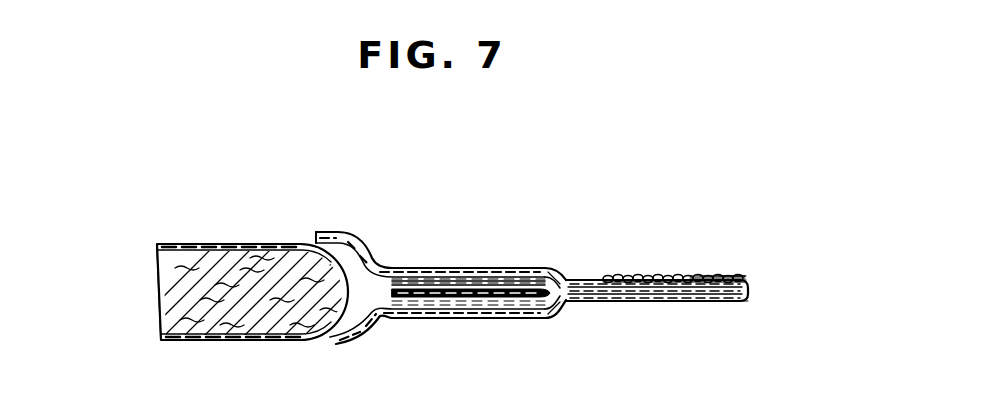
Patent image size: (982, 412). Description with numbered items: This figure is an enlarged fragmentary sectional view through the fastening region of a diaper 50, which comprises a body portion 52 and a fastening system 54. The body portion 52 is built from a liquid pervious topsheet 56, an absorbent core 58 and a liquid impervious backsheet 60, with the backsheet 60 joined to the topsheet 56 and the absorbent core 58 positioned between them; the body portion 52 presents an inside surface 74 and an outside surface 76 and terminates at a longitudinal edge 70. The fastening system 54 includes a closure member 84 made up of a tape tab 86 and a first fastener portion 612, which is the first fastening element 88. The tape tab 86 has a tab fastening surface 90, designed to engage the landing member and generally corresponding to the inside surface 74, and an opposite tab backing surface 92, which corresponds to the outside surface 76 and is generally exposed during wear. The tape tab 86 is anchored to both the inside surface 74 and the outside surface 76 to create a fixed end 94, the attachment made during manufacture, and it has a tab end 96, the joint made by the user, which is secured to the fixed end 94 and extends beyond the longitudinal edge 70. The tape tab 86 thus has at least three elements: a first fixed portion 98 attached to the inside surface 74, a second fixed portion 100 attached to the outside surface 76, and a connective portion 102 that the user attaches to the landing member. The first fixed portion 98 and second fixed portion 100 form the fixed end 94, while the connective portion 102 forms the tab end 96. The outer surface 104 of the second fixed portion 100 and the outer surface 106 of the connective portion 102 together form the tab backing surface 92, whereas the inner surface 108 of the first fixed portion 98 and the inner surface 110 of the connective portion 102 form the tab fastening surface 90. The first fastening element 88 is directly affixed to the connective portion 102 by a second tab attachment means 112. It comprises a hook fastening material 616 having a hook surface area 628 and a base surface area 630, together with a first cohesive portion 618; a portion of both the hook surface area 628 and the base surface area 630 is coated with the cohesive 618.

The diaper 50 is at (158, 203).
The body portion 52 is at (152, 228).
The fastening system 54 is at (500, 200).
The topsheet 56 is at (196, 244).
The absorbent core 58 is at (168, 284).
The backsheet 60 is at (180, 340).
The longitudinal edge 70 is at (552, 306).
The inside surface 74 is at (254, 242).
The outside surface 76 is at (260, 343).
The closure member 84 is at (708, 235).
The tape tab 86 is at (745, 220).
The first fastening element 88 is at (755, 274).
The tab fastening surface 90 is at (460, 266).
The tab backing surface 92 is at (475, 322).
The fixed end 94 is at (540, 270).
The tab end 96 is at (735, 302).
The first fixed portion 98 is at (400, 268).
The second fixed portion 100 is at (392, 318).
The connective portion 102 is at (657, 302).
The outer surface of second fixed portion 104 is at (435, 318).
The outer surface of connective portion 106 is at (708, 302).
The inner surface of first fixed portion 108 is at (515, 270).
The inner surface of connective portion 110 is at (748, 280).
The second tab attachment means 112 is at (590, 301).
The first fastener portion 612 is at (643, 242).
The hook fastening material 616 is at (674, 275).
The first cohesive portion 618 is at (608, 279).
The hook surface area 628 is at (708, 276).
The base surface area 630 is at (750, 276).